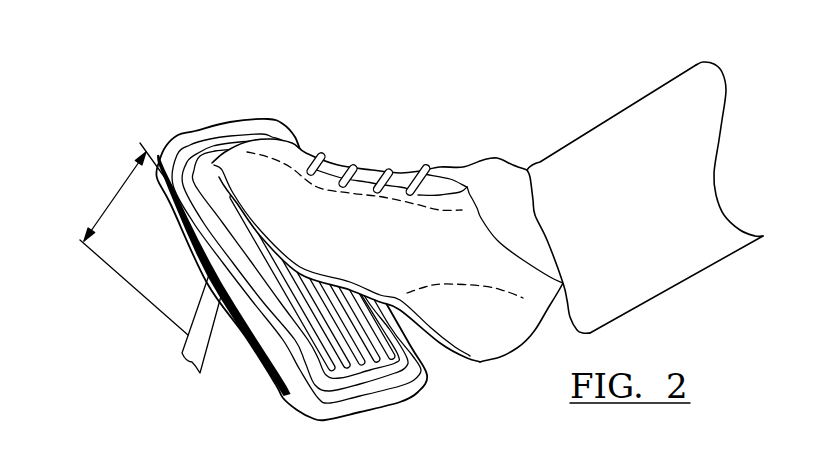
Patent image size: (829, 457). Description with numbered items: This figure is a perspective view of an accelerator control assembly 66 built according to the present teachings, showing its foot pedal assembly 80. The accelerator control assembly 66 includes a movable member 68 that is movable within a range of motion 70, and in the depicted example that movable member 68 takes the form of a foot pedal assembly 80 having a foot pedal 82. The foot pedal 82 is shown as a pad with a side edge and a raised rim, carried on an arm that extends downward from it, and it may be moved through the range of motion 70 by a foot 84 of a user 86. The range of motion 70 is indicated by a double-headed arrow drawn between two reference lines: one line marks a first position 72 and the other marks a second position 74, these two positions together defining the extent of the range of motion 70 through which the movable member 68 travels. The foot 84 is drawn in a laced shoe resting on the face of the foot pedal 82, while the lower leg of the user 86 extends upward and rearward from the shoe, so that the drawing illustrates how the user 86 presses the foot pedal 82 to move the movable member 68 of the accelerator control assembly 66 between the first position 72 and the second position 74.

The accelerator control assembly 66 is at (372, 139).
The movable member 68 is at (274, 353).
The range of motion 70 is at (111, 189).
The first position 72 is at (149, 150).
The second position 74 is at (136, 295).
The foot pedal assembly 80 is at (192, 90).
The foot pedal 82 is at (419, 373).
The foot 84 is at (450, 268).
The user 86 is at (723, 158).